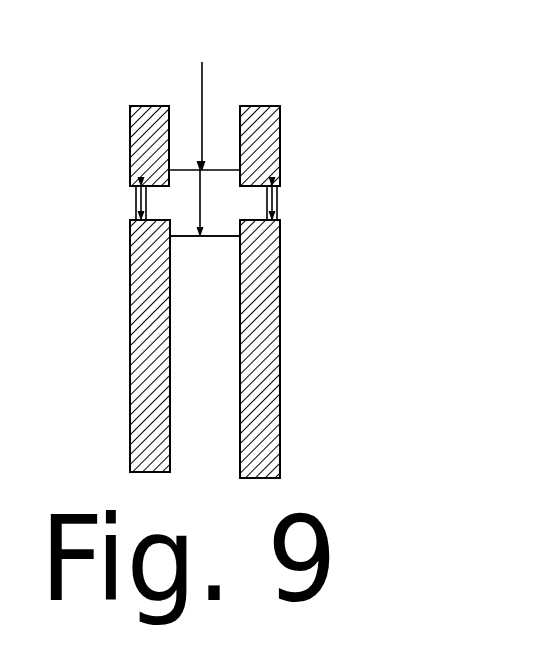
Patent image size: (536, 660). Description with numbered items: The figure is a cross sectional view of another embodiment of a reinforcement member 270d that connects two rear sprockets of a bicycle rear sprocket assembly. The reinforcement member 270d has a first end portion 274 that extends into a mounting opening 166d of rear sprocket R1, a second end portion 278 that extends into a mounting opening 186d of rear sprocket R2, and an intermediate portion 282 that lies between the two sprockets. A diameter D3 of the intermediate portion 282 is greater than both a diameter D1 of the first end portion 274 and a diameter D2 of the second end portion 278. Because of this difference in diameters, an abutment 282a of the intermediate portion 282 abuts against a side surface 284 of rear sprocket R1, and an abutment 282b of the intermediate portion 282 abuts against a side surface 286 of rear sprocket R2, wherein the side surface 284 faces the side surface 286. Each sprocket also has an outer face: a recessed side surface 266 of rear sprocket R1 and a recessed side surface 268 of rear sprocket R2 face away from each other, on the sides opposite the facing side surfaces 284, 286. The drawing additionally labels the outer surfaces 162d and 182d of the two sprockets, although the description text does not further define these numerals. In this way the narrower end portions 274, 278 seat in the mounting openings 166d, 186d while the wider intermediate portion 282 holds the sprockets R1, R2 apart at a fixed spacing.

The rear sprocket R1 is at (131, 122).
The rear sprocket R2 is at (281, 127).
The diameter of first end portion D1 is at (137, 206).
The diameter of second end portion D2 is at (275, 206).
The diameter of intermediate portion D3 is at (207, 203).
The mounting opening 166d is at (151, 187).
The mounting opening 186d is at (248, 188).
The reinforcement member 270d is at (208, 102).
The first end portion 274 is at (131, 215).
The second end portion 278 is at (278, 212).
The outer surface of first lower portion 162d is at (131, 280).
The outer surface of second lower portion 182d is at (281, 253).
The intermediate portion 282 is at (209, 237).
The abutment 282a is at (159, 229).
The abutment 282b is at (242, 224).
The recessed side surface 266 is at (131, 347).
The recessed side surface 268 is at (281, 352).
The side surface 284 is at (198, 410).
The side surface 286 is at (240, 460).